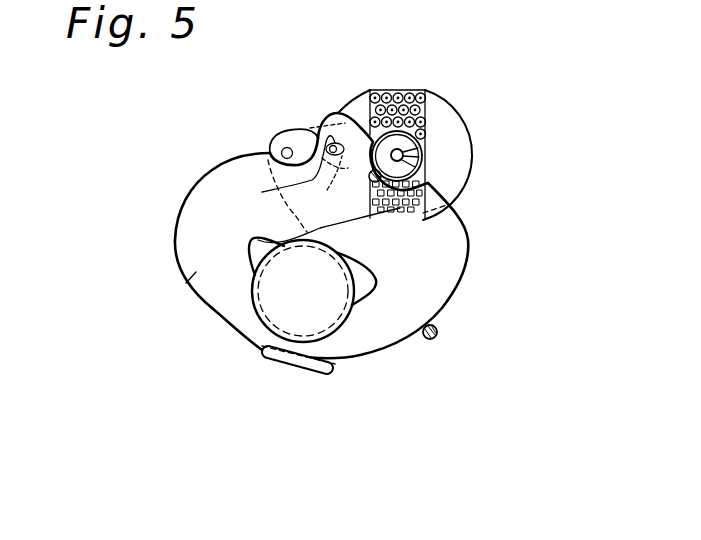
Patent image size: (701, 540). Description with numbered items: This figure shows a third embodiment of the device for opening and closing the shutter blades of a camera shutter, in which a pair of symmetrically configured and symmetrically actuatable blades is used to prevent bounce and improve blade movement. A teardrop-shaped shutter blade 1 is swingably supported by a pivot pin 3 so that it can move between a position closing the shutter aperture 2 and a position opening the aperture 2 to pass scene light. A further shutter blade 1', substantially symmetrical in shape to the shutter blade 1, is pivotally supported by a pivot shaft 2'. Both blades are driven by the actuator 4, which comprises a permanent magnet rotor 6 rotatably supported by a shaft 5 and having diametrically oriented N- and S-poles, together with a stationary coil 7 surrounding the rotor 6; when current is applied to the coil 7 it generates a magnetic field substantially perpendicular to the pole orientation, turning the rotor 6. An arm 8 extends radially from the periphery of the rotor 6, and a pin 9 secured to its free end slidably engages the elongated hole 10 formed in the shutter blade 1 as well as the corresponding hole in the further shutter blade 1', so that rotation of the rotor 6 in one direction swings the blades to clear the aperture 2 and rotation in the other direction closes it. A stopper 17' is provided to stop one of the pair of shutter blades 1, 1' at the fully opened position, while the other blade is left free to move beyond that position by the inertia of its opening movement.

The shutter blade 1 is at (339, 248).
The further shutter blade 1' is at (180, 274).
The shutter aperture 2 is at (321, 312).
The pivot shaft 2' is at (351, 190).
The pivot pin 3 is at (277, 140).
The actuator 4 is at (432, 125).
The shaft 5 is at (403, 154).
The permanent magnet rotor 6 is at (414, 167).
The stationary coil 7 is at (384, 90).
The arm 8 is at (298, 172).
The pin 9 is at (333, 113).
The elongated hole 10 is at (266, 177).
The stopper 17' is at (378, 346).